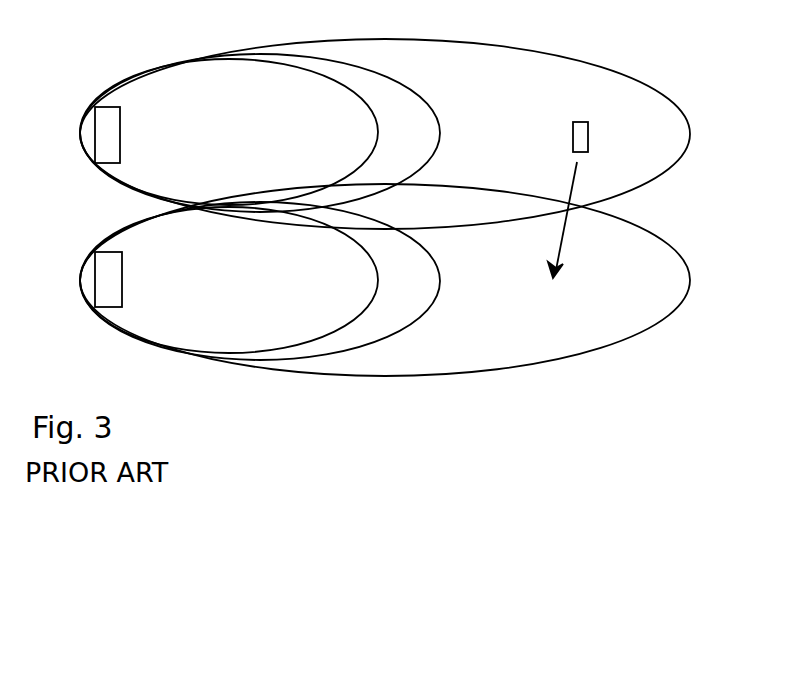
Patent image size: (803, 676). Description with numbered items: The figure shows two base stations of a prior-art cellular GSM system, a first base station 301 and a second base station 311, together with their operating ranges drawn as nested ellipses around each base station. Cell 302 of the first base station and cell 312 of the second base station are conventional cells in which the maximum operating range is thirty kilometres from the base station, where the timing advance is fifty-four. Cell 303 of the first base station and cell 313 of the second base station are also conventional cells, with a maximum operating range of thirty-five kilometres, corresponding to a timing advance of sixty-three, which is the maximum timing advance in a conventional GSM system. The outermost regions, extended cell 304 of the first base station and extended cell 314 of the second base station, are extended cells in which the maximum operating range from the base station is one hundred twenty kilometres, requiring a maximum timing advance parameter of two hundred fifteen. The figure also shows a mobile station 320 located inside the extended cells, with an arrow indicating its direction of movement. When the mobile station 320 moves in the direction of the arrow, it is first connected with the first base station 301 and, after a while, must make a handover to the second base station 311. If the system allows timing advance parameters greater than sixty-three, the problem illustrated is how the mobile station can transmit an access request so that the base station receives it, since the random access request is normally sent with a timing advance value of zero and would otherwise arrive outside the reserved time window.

The base station BTS1 301 is at (125, 135).
The cell of base station BTS1 302 is at (363, 105).
The cell of base station BTS1 303 is at (428, 100).
The extended cell of base station BTS1 304 is at (565, 52).
The base station BTS2 311 is at (125, 280).
The cell of base station BTS2 312 is at (363, 255).
The cell of base station BTS2 313 is at (440, 290).
The extended cell of base station BTS2 314 is at (655, 232).
The mobile station MS 320 is at (593, 135).